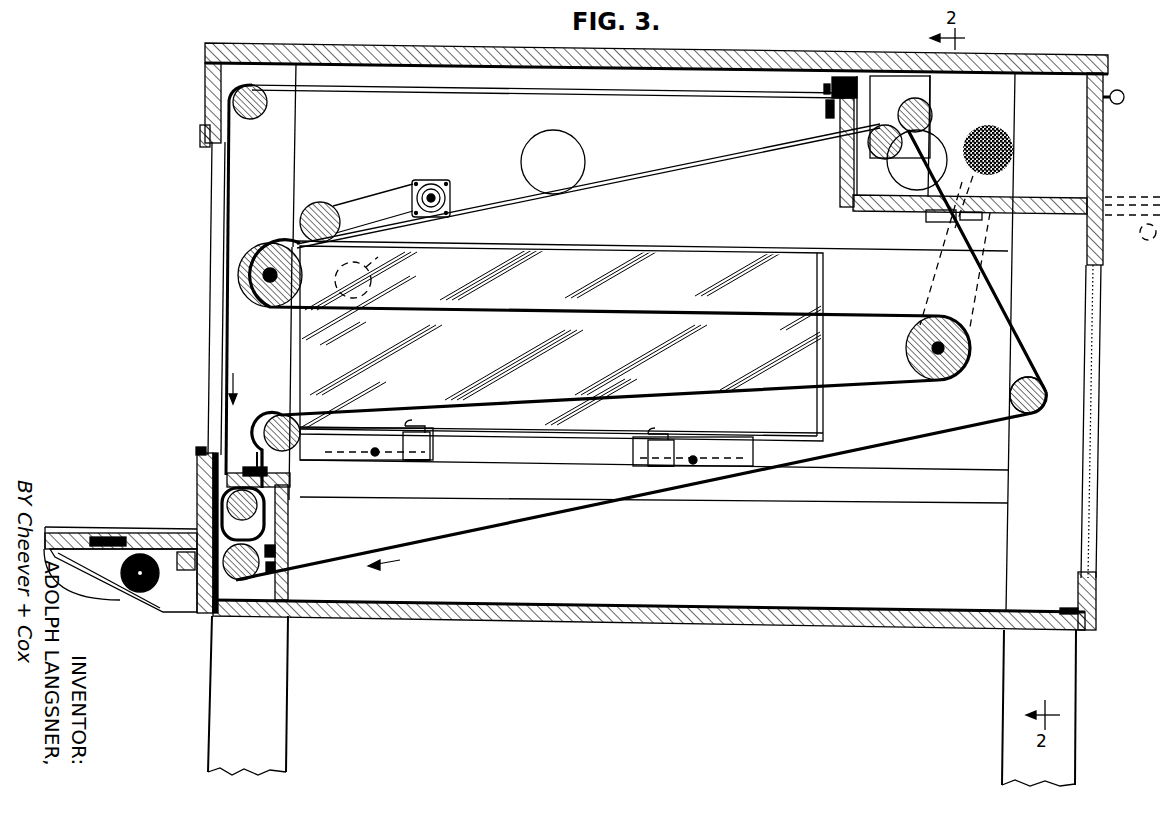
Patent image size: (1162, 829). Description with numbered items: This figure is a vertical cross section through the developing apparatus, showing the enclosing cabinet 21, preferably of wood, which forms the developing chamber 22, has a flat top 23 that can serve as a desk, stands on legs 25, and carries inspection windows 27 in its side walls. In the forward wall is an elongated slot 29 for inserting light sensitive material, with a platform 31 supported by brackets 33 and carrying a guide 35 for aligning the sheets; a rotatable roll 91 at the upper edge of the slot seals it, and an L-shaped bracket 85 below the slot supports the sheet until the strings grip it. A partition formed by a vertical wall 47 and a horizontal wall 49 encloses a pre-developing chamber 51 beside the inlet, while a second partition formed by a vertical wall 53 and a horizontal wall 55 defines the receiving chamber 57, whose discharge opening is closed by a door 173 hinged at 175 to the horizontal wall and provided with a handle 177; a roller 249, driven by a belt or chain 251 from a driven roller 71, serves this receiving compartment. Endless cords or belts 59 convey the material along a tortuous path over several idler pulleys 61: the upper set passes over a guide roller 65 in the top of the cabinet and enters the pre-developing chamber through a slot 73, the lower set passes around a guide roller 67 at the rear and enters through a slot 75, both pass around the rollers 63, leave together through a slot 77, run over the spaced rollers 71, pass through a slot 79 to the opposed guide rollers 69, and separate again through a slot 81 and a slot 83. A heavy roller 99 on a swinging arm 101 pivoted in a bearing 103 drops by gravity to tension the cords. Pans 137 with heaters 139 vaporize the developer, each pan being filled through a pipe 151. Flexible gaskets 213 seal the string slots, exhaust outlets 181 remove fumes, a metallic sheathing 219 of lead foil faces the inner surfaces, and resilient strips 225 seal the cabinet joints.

The enclosing cabinet 21 is at (205, 108).
The developing chamber 22 is at (716, 590).
The flat top 23 is at (452, 50).
The legs 25 is at (1014, 697).
The inspection windows 27 is at (715, 238).
The elongated slot 29 is at (200, 526).
The platform 31 is at (60, 527).
The brackets 33 is at (181, 612).
The guide 35 is at (90, 530).
The vertical wall 47 is at (289, 528).
The horizontal wall 49 is at (250, 467).
The pre-developing chamber 51 is at (250, 617).
The vertical wall 53 is at (840, 160).
The horizontal wall 55 is at (1040, 216).
The receiving chamber 57 is at (978, 78).
The endless cords or belts 59 is at (580, 511).
The idler pulley 61 is at (272, 103).
The rollers 63 is at (268, 512).
The guide roller 65 is at (265, 116).
The guide roller 67 is at (1034, 412).
The opposed guide rollers 69 is at (915, 98).
The spaced rollers 71 is at (270, 300).
The slot 73 is at (195, 458).
The slot 75 is at (290, 580).
The slot 77 is at (291, 481).
The slot 79 is at (833, 118).
The slot 81 is at (838, 78).
The slot 83 is at (962, 178).
The L-shaped bracket 85 is at (188, 572).
The rotatable roll 91 is at (198, 505).
The roller 99 is at (322, 203).
The swinging arm 101 is at (372, 206).
The bearing 103 is at (433, 183).
The pans 137 is at (436, 447).
The heater 139 is at (415, 463).
The pipe 151 is at (375, 458).
The door 173 is at (1104, 134).
The hinge 175 is at (1086, 196).
The handle 177 is at (1120, 94).
The exhaust outlet 181 is at (553, 136).
The flexible gaskets 213 is at (832, 88).
The metallic sheathing 219 is at (388, 72).
The strip 225 is at (1066, 632).
The roller 249 is at (1010, 141).
The belt or chain 251 is at (932, 280).